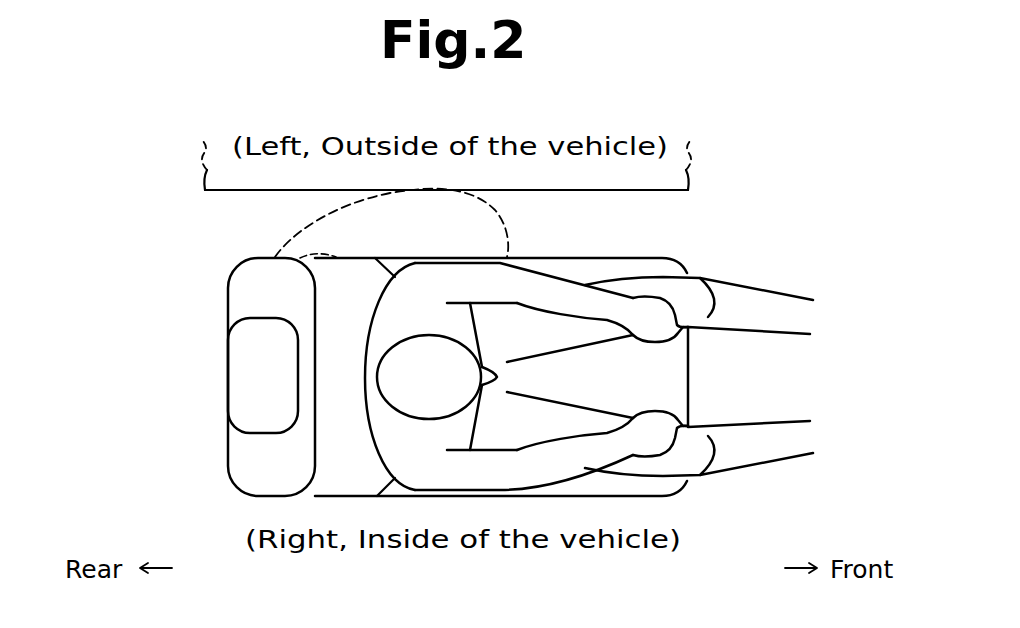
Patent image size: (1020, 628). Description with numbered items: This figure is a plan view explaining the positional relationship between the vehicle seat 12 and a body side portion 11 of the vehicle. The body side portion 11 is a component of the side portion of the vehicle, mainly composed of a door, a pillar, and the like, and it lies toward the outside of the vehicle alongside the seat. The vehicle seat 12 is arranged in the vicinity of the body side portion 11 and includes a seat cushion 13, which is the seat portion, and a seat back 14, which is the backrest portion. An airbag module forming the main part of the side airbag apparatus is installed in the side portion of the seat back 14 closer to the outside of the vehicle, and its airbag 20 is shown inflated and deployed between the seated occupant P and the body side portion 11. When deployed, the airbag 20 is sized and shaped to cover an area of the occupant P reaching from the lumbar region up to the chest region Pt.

The body side portion 11 is at (663, 190).
The vehicle seat 12 is at (416, 375).
The seat back 14 is at (228, 432).
The seat cushion 13 is at (680, 373).
The airbag 20 is at (307, 228).
The occupant P is at (576, 376).
The chest region Pt is at (468, 422).